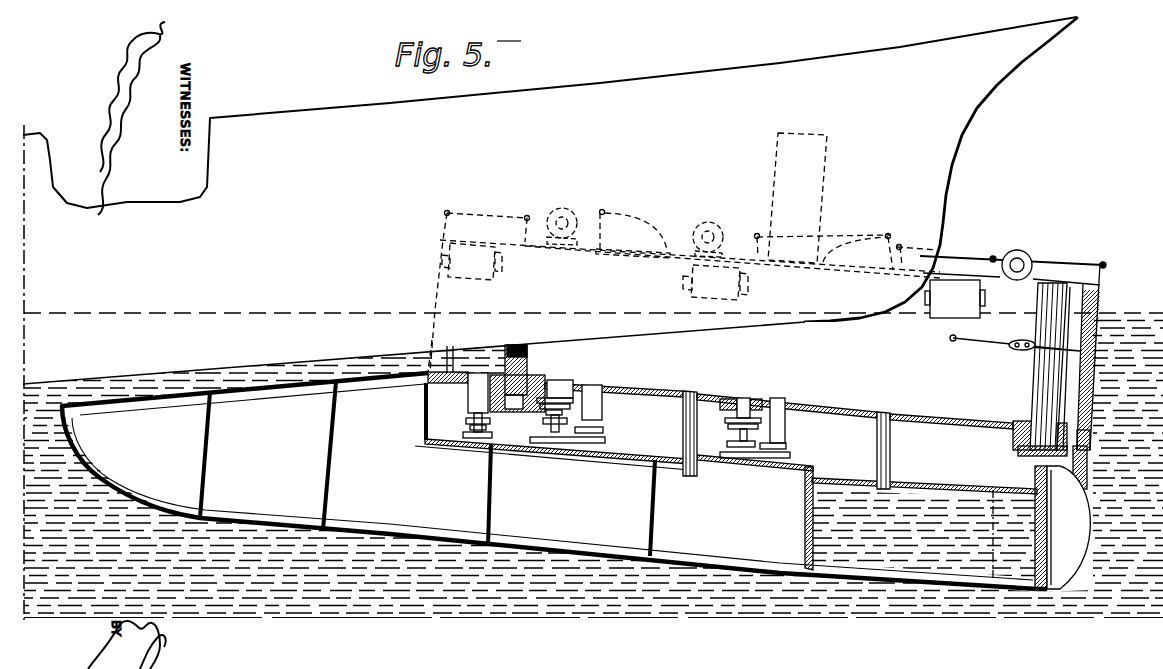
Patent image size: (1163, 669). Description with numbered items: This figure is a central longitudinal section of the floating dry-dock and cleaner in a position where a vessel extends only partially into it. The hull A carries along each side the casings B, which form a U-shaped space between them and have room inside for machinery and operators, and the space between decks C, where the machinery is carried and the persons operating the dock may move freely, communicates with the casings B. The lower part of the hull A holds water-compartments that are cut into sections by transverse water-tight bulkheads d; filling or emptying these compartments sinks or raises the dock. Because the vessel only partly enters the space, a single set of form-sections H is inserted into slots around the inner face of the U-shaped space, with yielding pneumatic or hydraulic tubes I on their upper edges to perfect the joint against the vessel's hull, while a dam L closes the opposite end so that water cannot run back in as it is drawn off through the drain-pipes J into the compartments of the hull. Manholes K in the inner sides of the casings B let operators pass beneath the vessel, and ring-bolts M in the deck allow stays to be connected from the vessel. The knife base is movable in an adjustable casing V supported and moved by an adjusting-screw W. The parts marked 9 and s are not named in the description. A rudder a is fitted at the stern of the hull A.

The hull A is at (571, 500).
The casings B is at (422, 353).
The space between decks C is at (945, 450).
The transverse water-tight bulkheads d is at (830, 527).
The form-sections H is at (530, 376).
The pneumatic or hydraulic tubes I is at (533, 352).
The drain-pipes J is at (877, 440).
The manholes K is at (713, 280).
The dam L is at (1103, 265).
The ring-bolts M is at (708, 222).
The adjustable casing V is at (468, 402).
The adjusting-screw W is at (478, 432).
The valve cylinders 9 is at (735, 410).
The valve seats s is at (775, 452).
The rudder a is at (1068, 527).